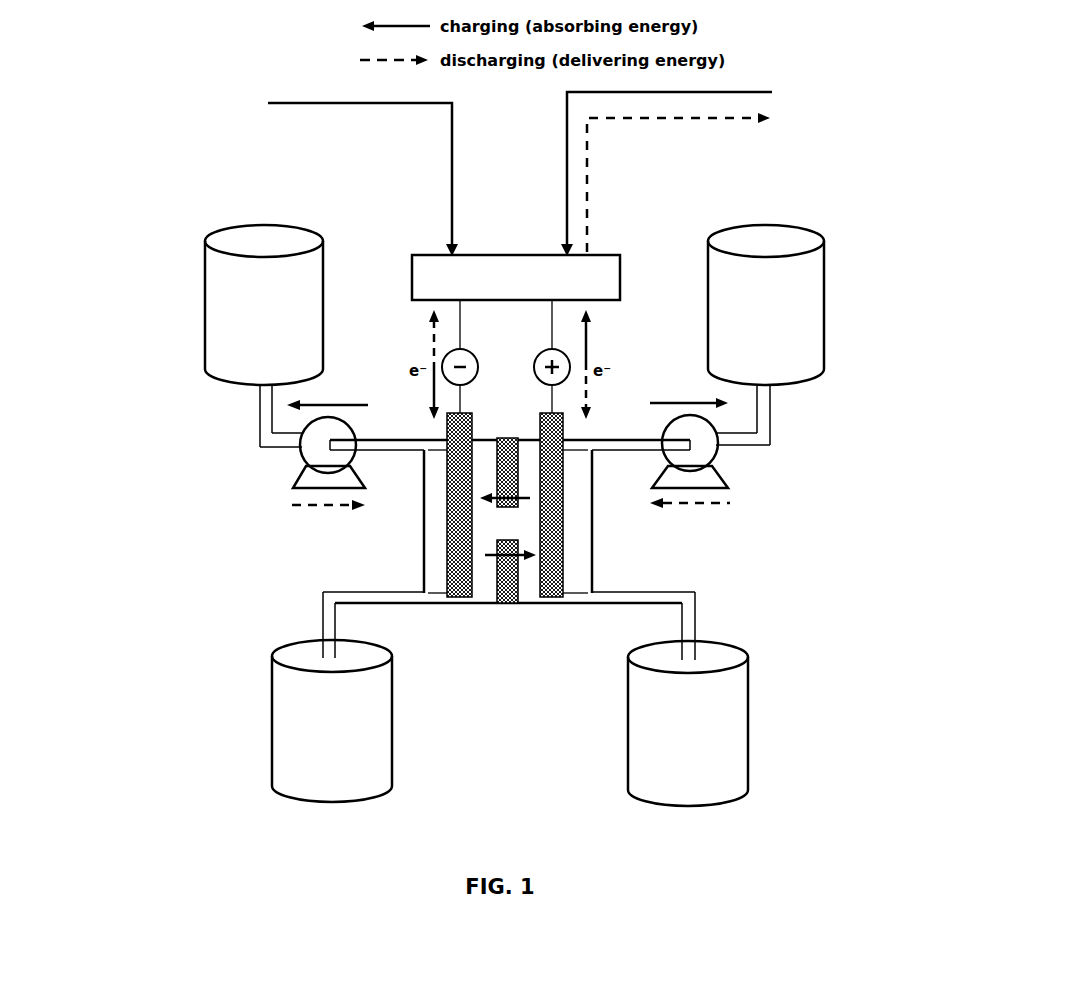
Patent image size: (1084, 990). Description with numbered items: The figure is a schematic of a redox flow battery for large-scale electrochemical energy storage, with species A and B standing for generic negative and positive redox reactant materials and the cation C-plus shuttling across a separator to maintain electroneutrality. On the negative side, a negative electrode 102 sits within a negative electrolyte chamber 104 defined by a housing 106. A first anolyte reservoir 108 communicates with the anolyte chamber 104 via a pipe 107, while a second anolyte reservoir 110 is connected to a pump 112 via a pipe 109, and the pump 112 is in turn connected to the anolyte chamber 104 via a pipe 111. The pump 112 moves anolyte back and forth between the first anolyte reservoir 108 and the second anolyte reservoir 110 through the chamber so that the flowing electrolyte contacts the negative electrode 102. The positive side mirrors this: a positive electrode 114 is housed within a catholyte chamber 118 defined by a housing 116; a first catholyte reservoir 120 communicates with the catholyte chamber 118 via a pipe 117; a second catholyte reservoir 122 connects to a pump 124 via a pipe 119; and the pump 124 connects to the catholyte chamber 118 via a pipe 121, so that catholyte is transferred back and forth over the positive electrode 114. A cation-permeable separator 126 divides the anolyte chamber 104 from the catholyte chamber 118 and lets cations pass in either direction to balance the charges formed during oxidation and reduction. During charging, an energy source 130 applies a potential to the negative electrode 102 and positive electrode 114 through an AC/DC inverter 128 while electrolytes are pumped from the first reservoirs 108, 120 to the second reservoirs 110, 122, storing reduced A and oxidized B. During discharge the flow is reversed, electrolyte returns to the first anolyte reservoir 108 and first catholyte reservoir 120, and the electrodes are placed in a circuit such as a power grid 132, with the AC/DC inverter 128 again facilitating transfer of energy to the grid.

The negative electrode 102 is at (445, 508).
The negative electrolyte chamber 104 is at (440, 476).
The housing 106 is at (424, 568).
The pipe 107 is at (391, 597).
The first negative electrolyte reservoir 108 is at (322, 754).
The pipe 109 is at (262, 409).
The second anolyte reservoir 110 is at (228, 337).
The pipe 111 is at (299, 448).
The pump 112 is at (303, 456).
The positive electrode 114 is at (564, 505).
The housing 116 is at (594, 568).
The pipe 117 is at (626, 598).
The positive electrolyte chamber 118 is at (578, 486).
The pipe 119 is at (767, 414).
The first positive electrolyte reservoir 120 is at (686, 754).
The pipe 121 is at (696, 448).
The second catholyte reservoir 122 is at (780, 330).
The pump 124 is at (712, 449).
The cation-permeable separator 126 is at (510, 606).
The AC/DC inverter 128 is at (509, 266).
The energy source 130 is at (268, 104).
The power grid 132 is at (773, 92).